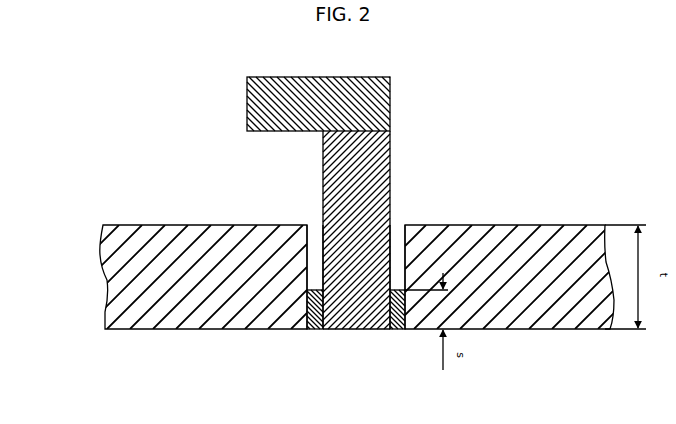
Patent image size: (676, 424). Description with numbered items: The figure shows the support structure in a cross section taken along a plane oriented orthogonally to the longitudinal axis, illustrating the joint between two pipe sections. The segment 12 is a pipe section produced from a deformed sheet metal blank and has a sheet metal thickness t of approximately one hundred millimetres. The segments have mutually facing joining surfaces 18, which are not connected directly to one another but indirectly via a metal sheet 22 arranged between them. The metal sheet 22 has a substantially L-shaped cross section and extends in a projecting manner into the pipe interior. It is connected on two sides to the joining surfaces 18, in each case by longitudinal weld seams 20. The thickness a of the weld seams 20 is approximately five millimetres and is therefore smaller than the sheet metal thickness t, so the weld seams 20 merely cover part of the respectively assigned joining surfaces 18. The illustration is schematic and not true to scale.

The segment 12 is at (104, 252).
The joining surfaces 18 is at (317, 247).
The weld seams 20 is at (318, 331).
The metal sheet 22 is at (392, 167).